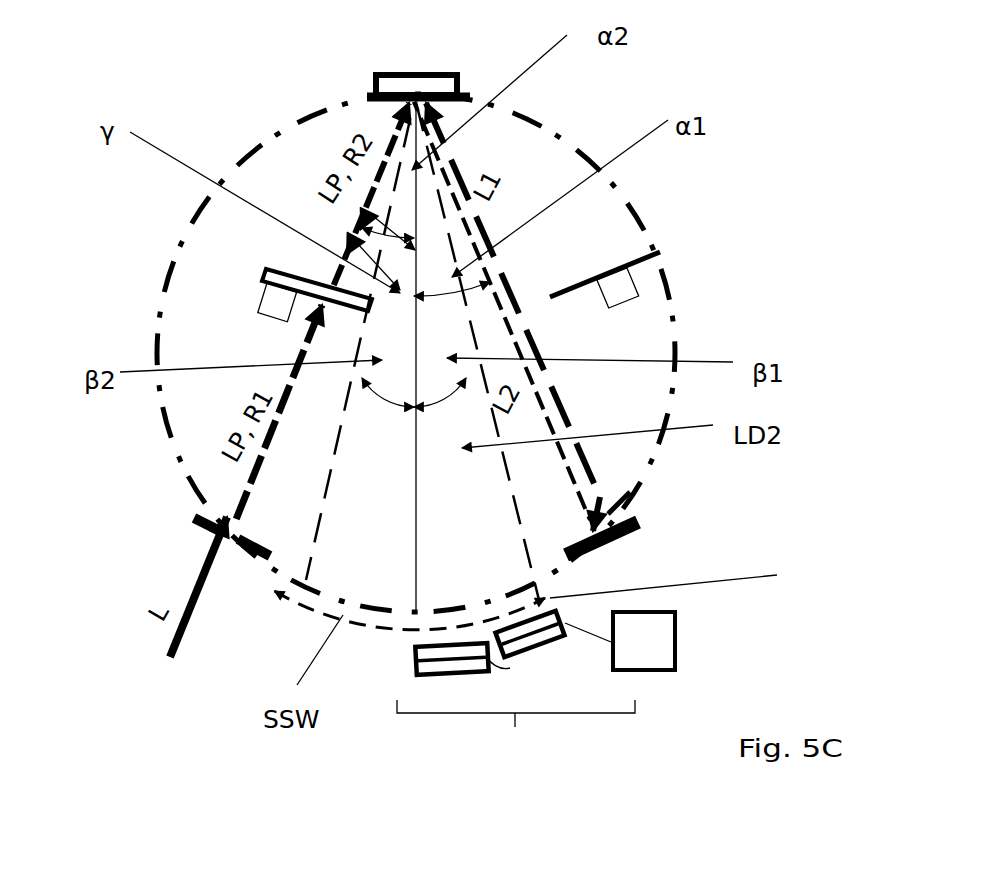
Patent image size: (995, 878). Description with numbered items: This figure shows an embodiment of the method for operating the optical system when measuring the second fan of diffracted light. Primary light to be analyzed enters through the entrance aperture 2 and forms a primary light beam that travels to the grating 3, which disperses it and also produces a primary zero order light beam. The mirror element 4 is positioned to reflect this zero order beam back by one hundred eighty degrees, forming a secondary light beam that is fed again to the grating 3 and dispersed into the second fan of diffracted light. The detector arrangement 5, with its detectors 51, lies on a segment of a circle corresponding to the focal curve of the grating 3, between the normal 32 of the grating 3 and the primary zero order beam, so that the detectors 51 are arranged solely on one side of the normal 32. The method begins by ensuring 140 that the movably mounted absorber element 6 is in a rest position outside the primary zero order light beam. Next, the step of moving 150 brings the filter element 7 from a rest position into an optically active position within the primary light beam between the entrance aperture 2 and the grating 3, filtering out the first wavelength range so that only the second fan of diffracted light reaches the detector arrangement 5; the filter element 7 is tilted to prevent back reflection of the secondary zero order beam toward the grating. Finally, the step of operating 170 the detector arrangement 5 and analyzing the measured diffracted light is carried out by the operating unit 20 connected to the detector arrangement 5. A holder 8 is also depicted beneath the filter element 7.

The entrance aperture 2 is at (196, 523).
The grating 3 is at (432, 88).
The mirror element 4 is at (642, 523).
The detector arrangement 5 is at (516, 736).
The absorber element 6 is at (627, 262).
The filter element 7 is at (422, 307).
The mirror holder 8 is at (259, 298).
The operating unit 20 is at (706, 662).
The normal of the grating 32 is at (400, 522).
The detectors 51 is at (529, 650).
The ensuring step 140 is at (687, 265).
The moving step 150 is at (347, 488).
The operating step 170 is at (657, 652).